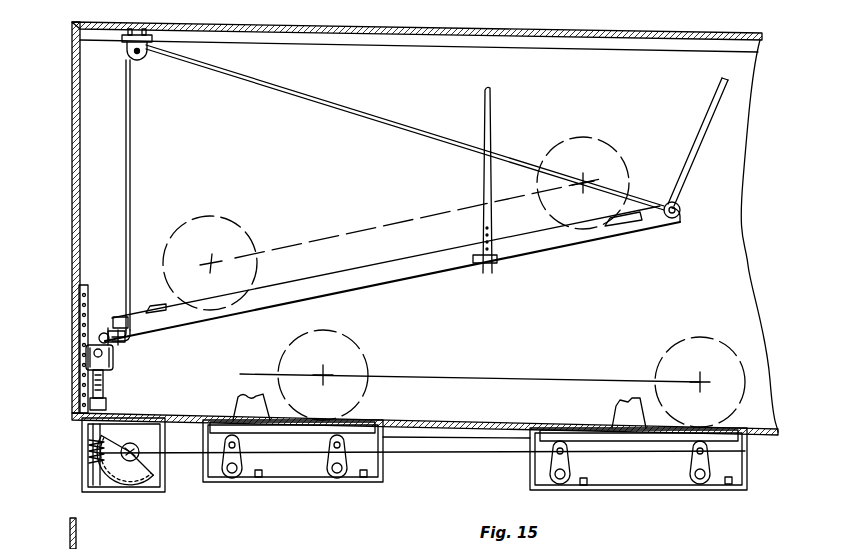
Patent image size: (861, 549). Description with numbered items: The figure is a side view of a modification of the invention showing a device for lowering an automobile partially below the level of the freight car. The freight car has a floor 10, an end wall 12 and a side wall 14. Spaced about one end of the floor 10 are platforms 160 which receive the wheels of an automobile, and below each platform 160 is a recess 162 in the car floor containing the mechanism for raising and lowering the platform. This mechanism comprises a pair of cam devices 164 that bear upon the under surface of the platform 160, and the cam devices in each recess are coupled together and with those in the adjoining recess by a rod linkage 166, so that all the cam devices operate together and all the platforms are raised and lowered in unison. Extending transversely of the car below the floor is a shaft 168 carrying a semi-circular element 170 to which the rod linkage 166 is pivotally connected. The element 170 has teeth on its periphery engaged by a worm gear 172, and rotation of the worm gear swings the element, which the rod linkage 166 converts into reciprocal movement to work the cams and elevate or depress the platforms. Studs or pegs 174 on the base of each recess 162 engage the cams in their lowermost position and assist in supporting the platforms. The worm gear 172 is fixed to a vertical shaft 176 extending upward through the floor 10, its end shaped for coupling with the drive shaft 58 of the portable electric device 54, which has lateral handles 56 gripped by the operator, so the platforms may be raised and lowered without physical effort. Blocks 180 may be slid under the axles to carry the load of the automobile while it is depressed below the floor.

The floor 10 is at (470, 424).
The end wall 12 is at (72, 183).
The side wall 14 is at (738, 258).
The portable electric device 54 is at (113, 354).
The handles 56 is at (118, 348).
The drive shaft 58 is at (100, 396).
The platform 160 is at (360, 425).
The recess 162 is at (467, 465).
The cam device 164 is at (335, 462).
The rod linkage 166 is at (497, 452).
The shaft 168 is at (133, 462).
The semi-circular element 170 is at (150, 478).
The worm gear 172 is at (92, 453).
The studs or pegs 174 is at (367, 473).
The vertical shaft 176 is at (88, 431).
The blocks 180 is at (238, 410).